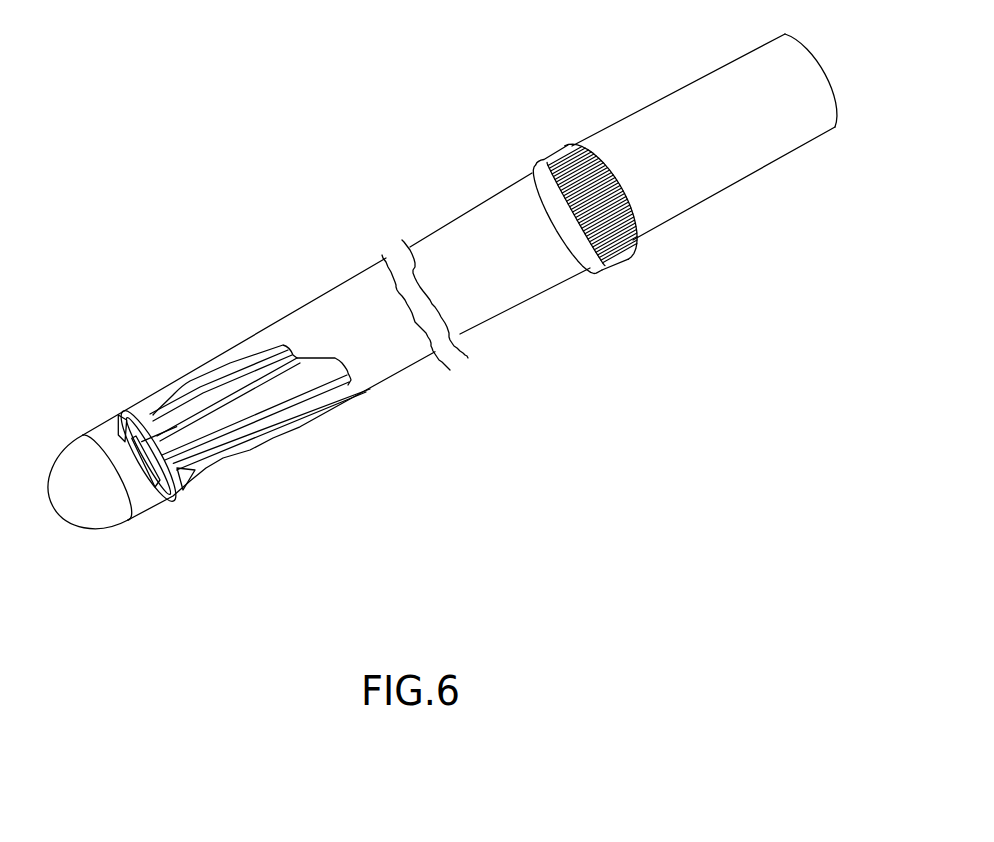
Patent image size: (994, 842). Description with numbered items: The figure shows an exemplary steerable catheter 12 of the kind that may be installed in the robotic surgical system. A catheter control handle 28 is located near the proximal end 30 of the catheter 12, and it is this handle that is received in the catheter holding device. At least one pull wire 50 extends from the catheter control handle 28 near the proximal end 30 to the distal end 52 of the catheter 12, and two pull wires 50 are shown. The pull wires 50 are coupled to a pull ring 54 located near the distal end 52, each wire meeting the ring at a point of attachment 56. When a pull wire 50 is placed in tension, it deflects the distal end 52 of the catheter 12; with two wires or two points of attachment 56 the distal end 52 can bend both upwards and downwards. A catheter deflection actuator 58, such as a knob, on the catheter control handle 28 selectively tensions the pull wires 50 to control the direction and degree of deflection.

The catheter 12 is at (294, 214).
The catheter control handle 28 is at (670, 120).
The proximal end 30 is at (482, 172).
The pull wire 50 is at (223, 395).
The distal end 52 is at (79, 405).
The pull ring 54 is at (164, 472).
The points of attachment 56 is at (133, 445).
The catheter deflection actuator 58 is at (627, 253).